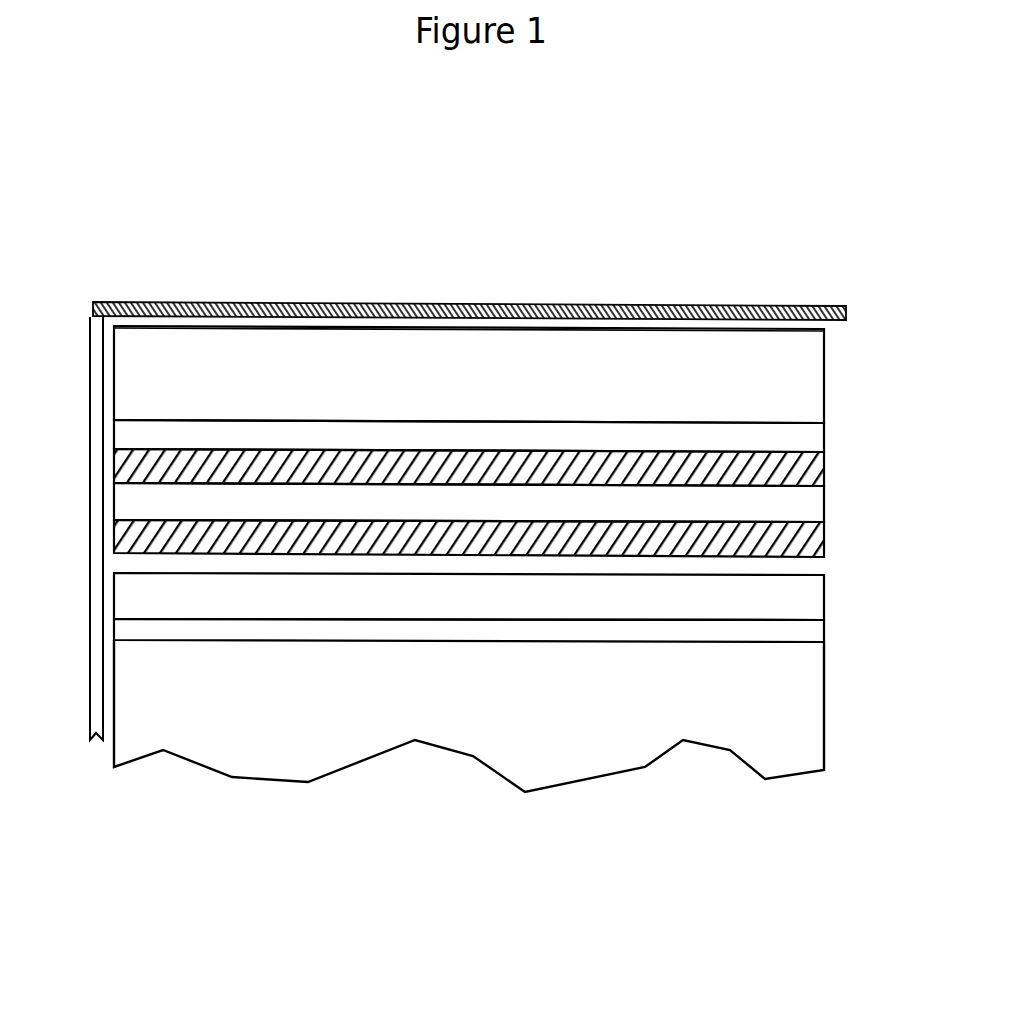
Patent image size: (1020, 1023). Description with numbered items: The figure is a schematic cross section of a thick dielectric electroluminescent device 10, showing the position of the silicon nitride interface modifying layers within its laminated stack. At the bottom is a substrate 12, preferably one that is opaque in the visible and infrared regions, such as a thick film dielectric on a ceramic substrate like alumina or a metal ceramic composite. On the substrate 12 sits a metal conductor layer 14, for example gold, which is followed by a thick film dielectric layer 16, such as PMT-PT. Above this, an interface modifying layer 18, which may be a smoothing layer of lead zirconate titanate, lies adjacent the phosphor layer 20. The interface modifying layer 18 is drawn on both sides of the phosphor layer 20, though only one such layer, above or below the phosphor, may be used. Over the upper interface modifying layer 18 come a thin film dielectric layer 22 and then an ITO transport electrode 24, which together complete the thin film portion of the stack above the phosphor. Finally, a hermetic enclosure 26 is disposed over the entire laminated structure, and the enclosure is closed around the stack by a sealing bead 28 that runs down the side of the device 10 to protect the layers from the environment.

The electroluminescent device 10 is at (853, 278).
The substrate 12 is at (824, 667).
The metal conductor layer 14 is at (824, 632).
The thick film dielectric layer 16 is at (824, 598).
The interface modifying layer 18 is at (824, 472).
The phosphor layer 20 is at (824, 504).
The thin film dielectric layer 22 is at (824, 433).
The ITO transport electrode 24 is at (824, 382).
The hermetic enclosure 26 is at (847, 312).
The sealing bead 28 is at (90, 483).